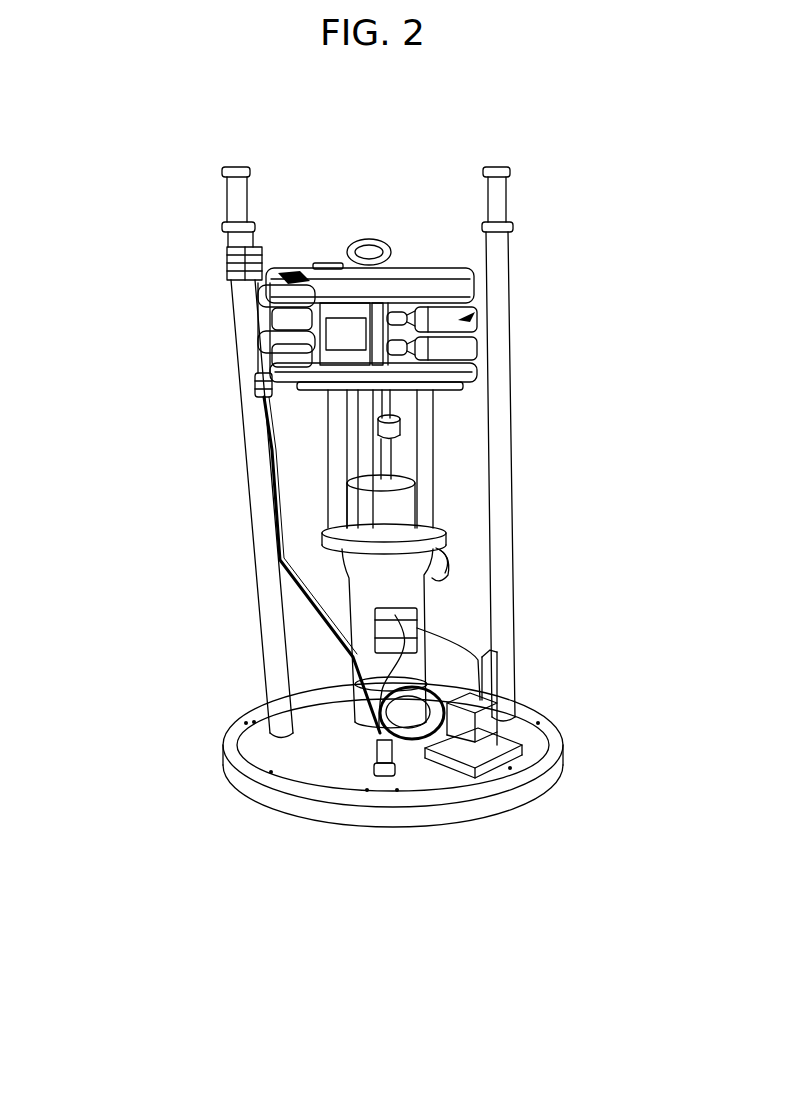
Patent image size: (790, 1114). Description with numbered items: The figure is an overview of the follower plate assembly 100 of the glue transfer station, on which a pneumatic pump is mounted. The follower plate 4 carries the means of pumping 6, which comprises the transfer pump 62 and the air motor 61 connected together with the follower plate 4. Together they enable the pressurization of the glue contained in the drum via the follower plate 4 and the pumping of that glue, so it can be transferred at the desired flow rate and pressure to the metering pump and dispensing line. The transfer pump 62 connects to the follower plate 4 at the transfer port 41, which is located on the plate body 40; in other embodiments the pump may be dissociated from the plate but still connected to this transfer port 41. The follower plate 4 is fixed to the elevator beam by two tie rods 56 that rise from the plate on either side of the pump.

The inspection apparatus 100 is at (166, 284).
The follower plate 4 is at (569, 735).
The base plate 40 is at (519, 797).
The transfer port 41 is at (352, 742).
The means of pumping 6 is at (312, 505).
The tie rods 56 is at (500, 433).
The air motor 61 is at (470, 313).
The transfer pump 62 is at (420, 597).